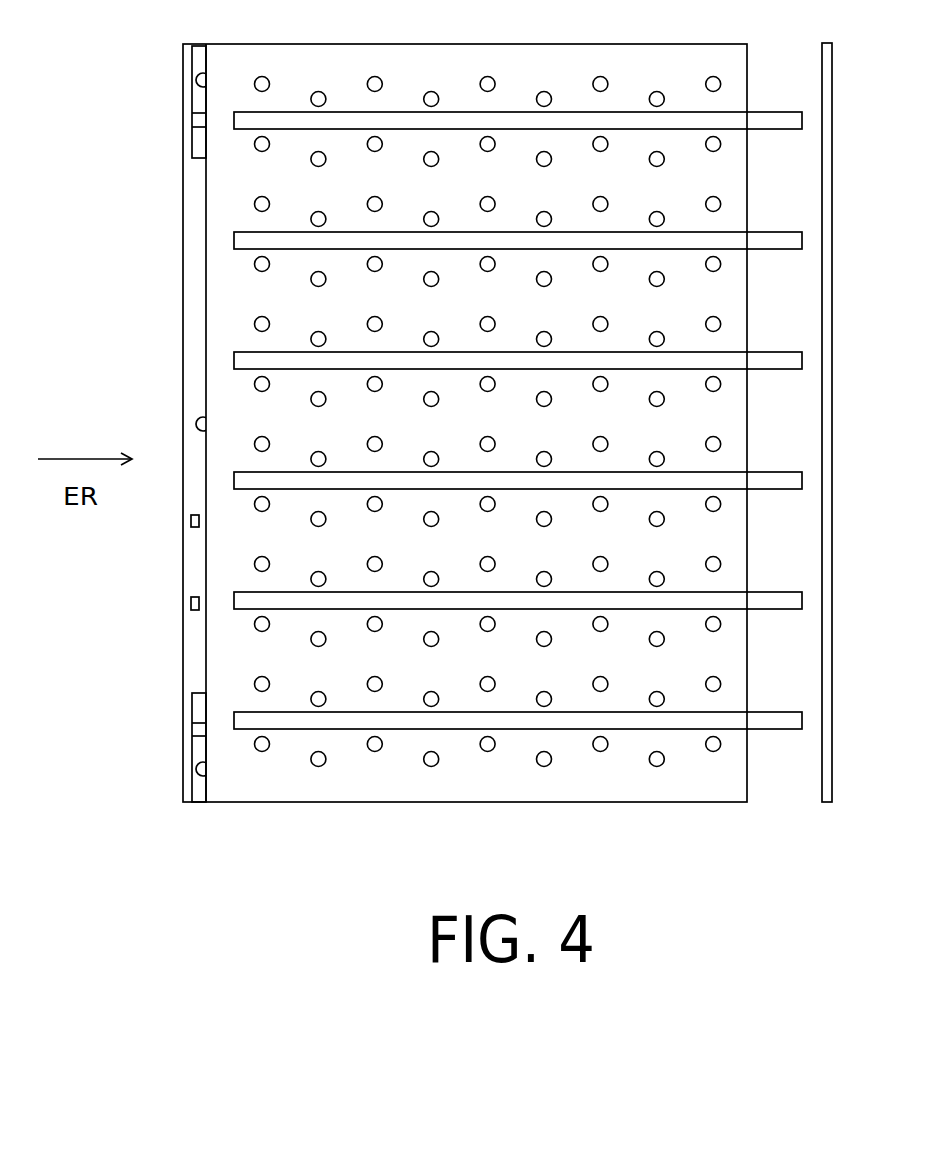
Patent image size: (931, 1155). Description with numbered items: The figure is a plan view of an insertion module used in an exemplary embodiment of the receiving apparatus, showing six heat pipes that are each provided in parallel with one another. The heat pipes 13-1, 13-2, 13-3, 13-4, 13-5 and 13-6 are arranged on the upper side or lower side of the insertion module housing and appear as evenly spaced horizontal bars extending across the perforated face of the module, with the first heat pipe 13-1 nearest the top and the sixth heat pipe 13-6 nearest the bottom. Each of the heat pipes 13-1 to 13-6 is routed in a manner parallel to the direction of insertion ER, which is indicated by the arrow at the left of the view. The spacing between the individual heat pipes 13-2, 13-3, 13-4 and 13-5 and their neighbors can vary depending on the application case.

The heat pipe 13-1 is at (757, 112).
The heat pipe 13-2 is at (757, 232).
The heat pipe 13-3 is at (757, 352).
The heat pipe 13-4 is at (757, 472).
The heat pipe 13-5 is at (757, 592).
The heat pipe 13-6 is at (757, 712).